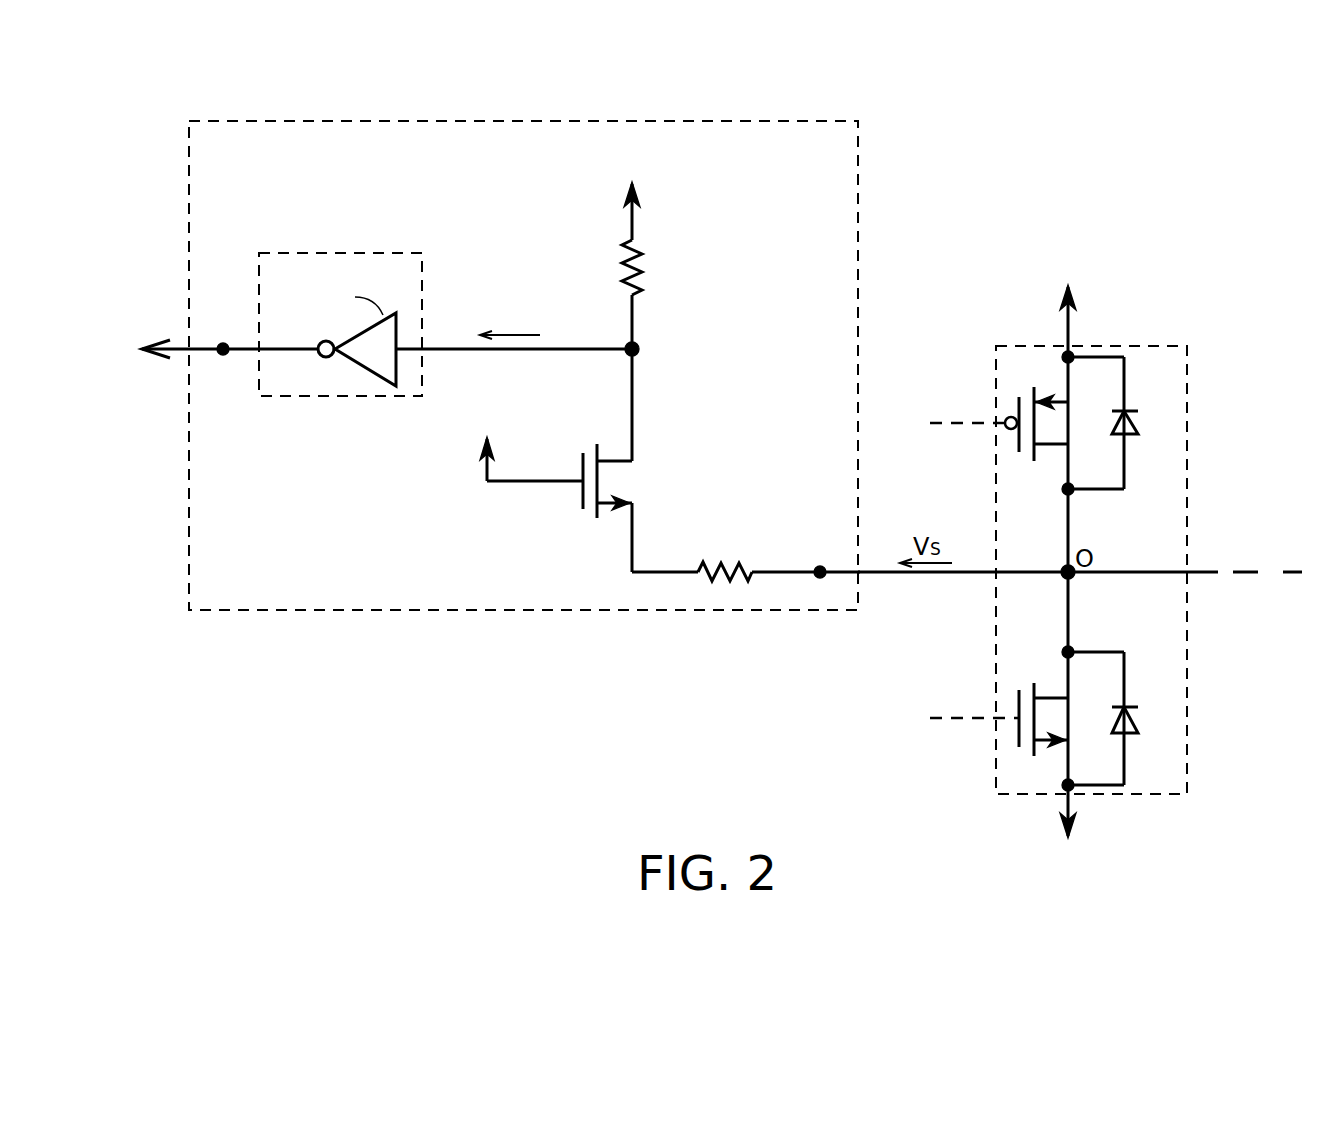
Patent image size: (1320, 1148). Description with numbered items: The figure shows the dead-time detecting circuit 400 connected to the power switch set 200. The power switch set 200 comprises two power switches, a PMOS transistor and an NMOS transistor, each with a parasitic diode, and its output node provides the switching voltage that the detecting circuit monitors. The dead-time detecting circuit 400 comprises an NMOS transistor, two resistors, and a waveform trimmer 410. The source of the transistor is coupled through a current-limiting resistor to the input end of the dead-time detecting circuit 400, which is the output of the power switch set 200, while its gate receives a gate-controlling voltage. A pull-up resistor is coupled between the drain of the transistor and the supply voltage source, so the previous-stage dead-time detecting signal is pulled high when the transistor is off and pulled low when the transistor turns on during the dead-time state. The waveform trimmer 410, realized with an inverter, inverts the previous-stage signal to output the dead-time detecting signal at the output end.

The power switch set 200 is at (1153, 346).
The dead-time detecting circuit 400 is at (523, 611).
The waveform trimmer 410 is at (334, 252).